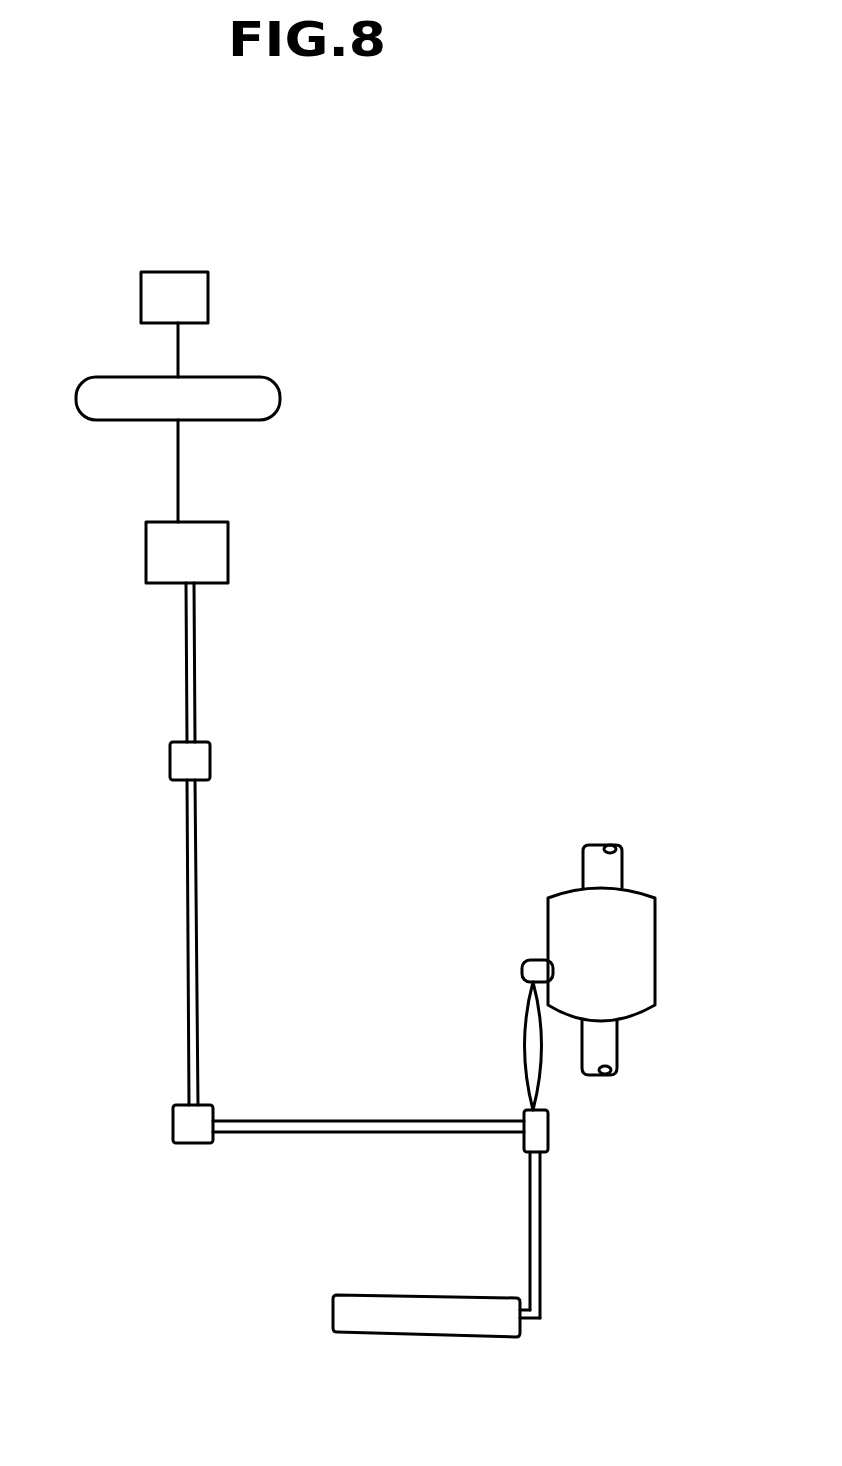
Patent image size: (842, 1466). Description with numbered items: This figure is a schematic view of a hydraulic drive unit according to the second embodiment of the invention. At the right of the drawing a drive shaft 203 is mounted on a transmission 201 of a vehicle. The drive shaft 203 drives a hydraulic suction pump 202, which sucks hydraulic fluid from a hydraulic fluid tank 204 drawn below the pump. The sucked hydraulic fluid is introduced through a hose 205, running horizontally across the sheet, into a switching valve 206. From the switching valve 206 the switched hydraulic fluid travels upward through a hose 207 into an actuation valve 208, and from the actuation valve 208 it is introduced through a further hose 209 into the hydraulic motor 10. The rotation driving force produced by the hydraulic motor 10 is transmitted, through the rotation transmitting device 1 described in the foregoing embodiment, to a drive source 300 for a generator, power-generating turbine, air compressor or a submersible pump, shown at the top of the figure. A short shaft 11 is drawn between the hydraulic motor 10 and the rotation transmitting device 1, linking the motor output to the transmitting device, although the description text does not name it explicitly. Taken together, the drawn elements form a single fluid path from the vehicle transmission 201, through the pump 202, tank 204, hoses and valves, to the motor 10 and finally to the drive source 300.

The drive source 300 is at (208, 280).
The rotation transmitting device 1 is at (77, 387).
The shaft 11 is at (183, 468).
The hydraulic motor 10 is at (145, 557).
The hose 209 is at (183, 652).
The actuation valve 208 is at (170, 770).
The hose 207 is at (187, 927).
The switching valve 206 is at (173, 1130).
The hose 205 is at (332, 1120).
The hydraulic suction pump 202 is at (524, 1145).
The hydraulic fluid tank 204 is at (347, 1295).
The drive shaft 203 is at (520, 1043).
The transmission 201 is at (655, 957).